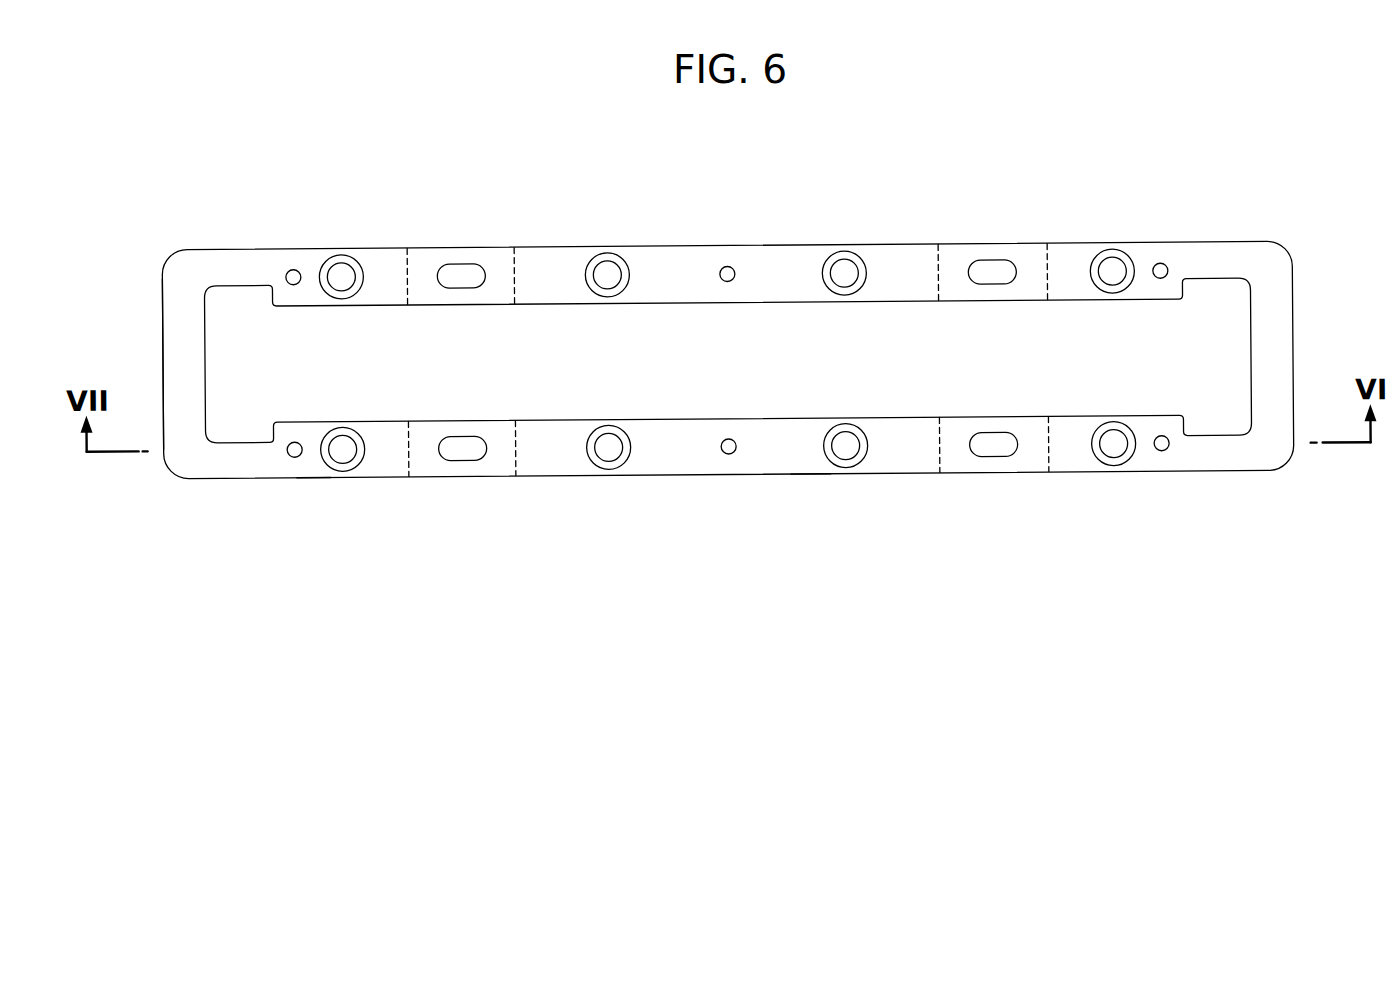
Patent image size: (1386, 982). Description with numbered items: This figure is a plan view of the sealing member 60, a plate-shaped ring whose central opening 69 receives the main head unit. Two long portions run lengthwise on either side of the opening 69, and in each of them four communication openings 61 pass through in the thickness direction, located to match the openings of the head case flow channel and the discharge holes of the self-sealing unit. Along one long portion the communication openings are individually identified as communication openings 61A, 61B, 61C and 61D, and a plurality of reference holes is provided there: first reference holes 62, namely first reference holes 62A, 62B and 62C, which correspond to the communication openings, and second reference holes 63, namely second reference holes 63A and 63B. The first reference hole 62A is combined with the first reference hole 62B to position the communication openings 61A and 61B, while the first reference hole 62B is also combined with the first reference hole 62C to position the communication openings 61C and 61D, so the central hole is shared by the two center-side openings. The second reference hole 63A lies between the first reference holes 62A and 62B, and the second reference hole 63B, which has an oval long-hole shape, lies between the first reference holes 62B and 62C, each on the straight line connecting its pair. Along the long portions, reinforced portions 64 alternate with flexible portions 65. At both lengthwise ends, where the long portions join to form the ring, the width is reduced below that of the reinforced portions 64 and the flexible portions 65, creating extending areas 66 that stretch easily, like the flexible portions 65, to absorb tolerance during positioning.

The sealing member 60 is at (1013, 179).
The communication openings 61 is at (844, 268).
The communication opening 61A is at (353, 467).
The communication opening 61B is at (620, 453).
The communication opening 61C is at (857, 453).
The communication opening 61D is at (1123, 453).
The first reference holes 62 is at (722, 393).
The first reference hole 62A is at (293, 456).
The first reference hole 62B is at (732, 454).
The first reference hole 62C is at (1165, 452).
The second reference holes 63 is at (726, 399).
The second reference hole 63A is at (463, 456).
The second reference hole 63B is at (999, 451).
The reinforced portions 64 is at (315, 471).
The flexible portions 65 is at (428, 468).
The extending areas 66 is at (160, 319).
The opening 69 is at (1232, 338).